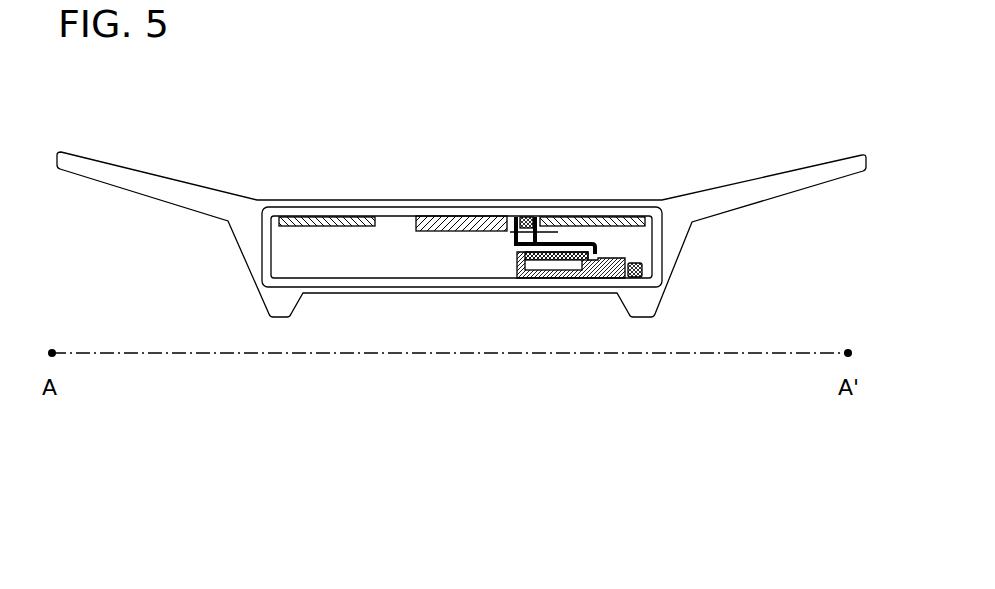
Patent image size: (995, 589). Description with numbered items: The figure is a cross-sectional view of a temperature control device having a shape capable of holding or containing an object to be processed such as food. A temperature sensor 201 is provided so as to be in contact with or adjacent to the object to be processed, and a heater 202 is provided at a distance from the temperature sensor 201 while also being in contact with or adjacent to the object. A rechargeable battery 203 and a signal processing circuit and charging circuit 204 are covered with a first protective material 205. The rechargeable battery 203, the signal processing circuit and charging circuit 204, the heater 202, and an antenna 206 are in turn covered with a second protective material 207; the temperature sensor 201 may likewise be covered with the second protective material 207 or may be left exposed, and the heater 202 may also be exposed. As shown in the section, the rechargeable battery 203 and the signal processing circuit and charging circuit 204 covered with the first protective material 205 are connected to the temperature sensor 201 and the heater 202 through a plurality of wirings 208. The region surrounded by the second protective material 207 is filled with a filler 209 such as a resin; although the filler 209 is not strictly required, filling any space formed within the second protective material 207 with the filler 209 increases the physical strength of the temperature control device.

The temperature sensor 201 is at (452, 224).
The heater 202 is at (318, 222).
The rechargeable battery 203 is at (528, 258).
The signal processing circuit and charging circuit 204 is at (600, 272).
The first protective material 205 is at (627, 265).
The antenna 206 is at (635, 267).
The second protective material 207 is at (530, 215).
The wirings 208 is at (510, 232).
The filler 209 is at (298, 256).